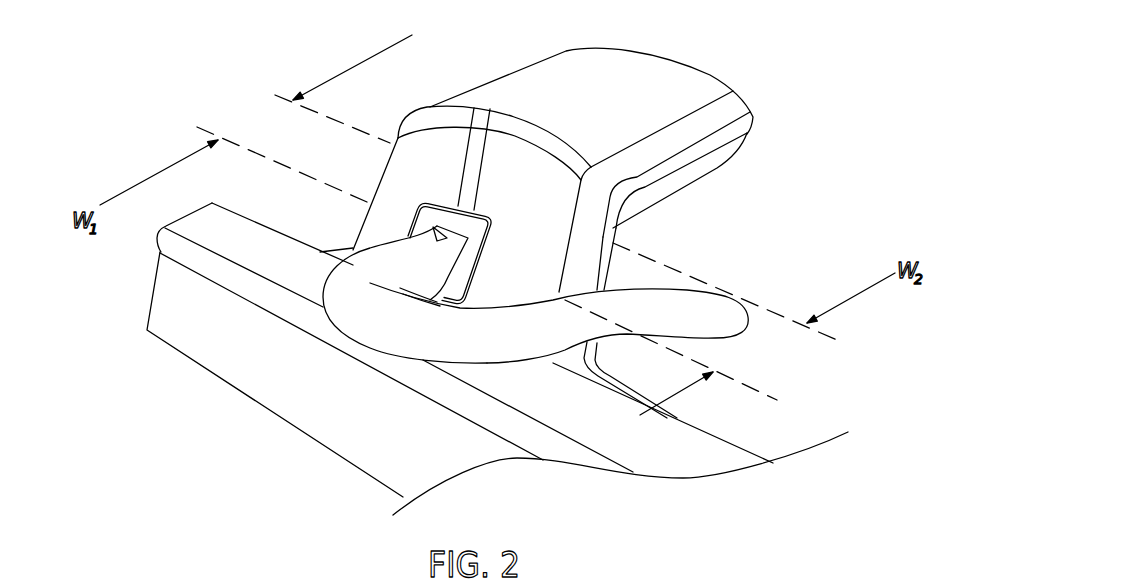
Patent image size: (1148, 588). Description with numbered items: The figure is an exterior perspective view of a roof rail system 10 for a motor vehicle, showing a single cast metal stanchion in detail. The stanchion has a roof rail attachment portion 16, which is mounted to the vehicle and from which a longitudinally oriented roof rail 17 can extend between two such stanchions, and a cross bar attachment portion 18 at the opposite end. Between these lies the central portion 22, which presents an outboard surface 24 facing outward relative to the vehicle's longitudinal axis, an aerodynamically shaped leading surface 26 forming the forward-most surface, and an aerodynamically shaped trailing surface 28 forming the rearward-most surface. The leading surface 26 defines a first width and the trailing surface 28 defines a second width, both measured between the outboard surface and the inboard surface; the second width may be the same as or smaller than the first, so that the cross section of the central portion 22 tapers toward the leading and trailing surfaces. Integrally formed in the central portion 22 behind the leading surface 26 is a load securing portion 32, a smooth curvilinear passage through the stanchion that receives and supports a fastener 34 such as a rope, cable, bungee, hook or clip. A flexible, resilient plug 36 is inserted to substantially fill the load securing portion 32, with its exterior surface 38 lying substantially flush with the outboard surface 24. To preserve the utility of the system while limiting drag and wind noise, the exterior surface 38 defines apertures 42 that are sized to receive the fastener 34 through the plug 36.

The roof rail system 10 is at (773, 55).
The roof rail attachment portion 16 is at (672, 410).
The roof rail 17 is at (627, 452).
The cross bar attachment portion 18 is at (757, 128).
The central portion 22 is at (612, 267).
The outboard surface 24 is at (407, 163).
The leading surface 26 is at (357, 250).
The trailing surface 28 is at (613, 230).
The load securing portion 32 is at (490, 277).
The fastener 34 is at (443, 348).
The plug 36 is at (440, 297).
The exterior surface 38 is at (487, 212).
The apertures 42 is at (410, 237).